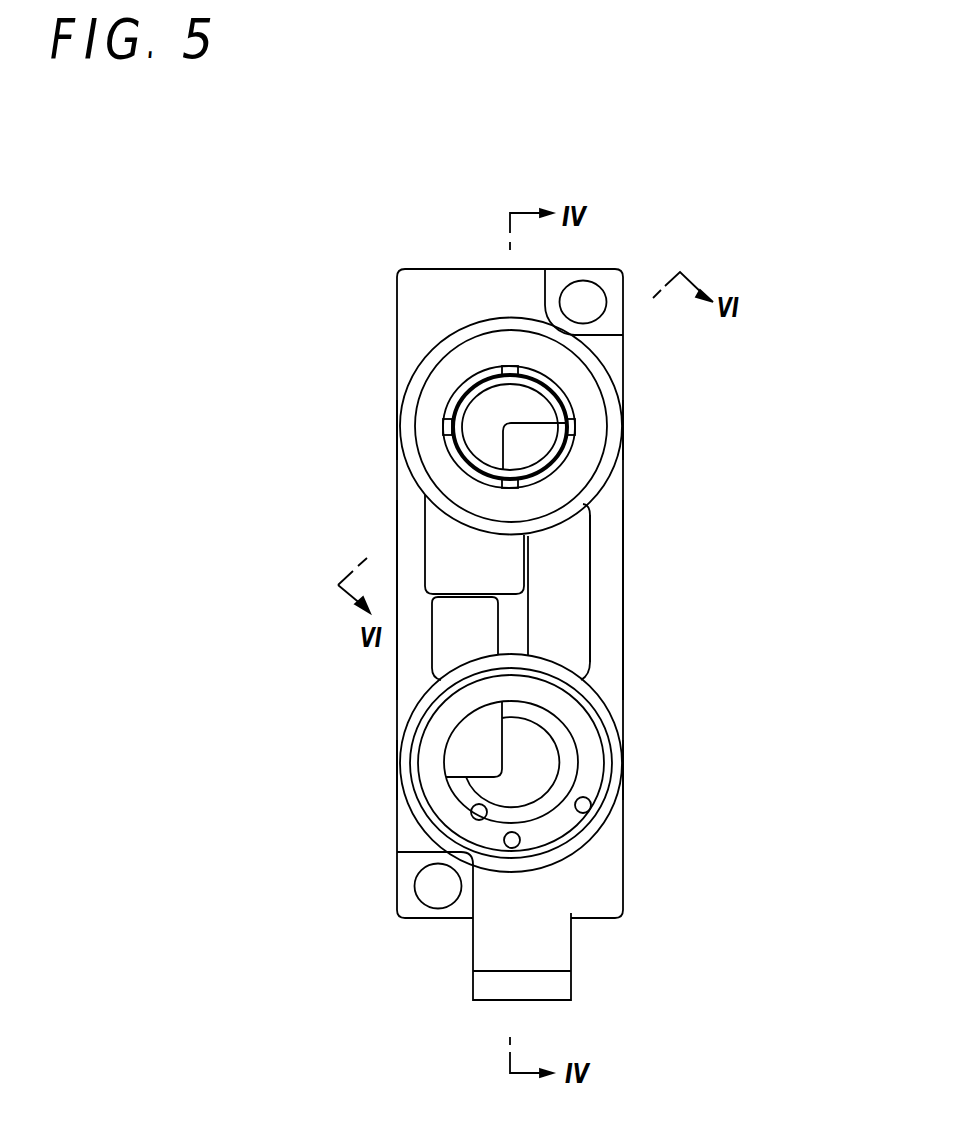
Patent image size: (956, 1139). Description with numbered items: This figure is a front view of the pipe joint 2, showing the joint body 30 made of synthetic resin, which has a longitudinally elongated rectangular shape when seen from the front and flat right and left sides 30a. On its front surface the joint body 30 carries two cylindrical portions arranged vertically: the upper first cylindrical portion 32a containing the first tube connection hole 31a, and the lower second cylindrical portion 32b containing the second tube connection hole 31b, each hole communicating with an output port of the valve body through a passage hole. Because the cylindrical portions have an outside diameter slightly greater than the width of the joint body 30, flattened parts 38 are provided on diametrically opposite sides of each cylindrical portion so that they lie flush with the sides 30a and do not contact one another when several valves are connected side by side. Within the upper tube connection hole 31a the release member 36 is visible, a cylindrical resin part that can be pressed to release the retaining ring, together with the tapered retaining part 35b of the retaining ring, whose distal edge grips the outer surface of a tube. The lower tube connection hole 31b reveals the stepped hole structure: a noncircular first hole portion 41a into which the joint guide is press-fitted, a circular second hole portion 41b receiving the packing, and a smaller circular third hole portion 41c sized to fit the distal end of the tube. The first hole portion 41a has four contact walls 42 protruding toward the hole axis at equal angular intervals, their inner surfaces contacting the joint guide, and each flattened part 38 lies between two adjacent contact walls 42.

The pipe joint 2 is at (429, 203).
The joint body 30 is at (420, 293).
The sides 30a is at (397, 693).
The flattened parts 38 is at (397, 432).
The release member 36 is at (430, 385).
The retaining part 35b is at (452, 460).
The first tube connection hole 31a is at (543, 401).
The first cylindrical portion 32a is at (610, 480).
The second cylindrical portion 32b is at (545, 657).
The contact walls 42 is at (443, 700).
The second tube connection hole 31b is at (541, 741).
The first hole portion 41a is at (593, 800).
The second hole portion 41b is at (512, 848).
The third hole portion 41c is at (480, 812).